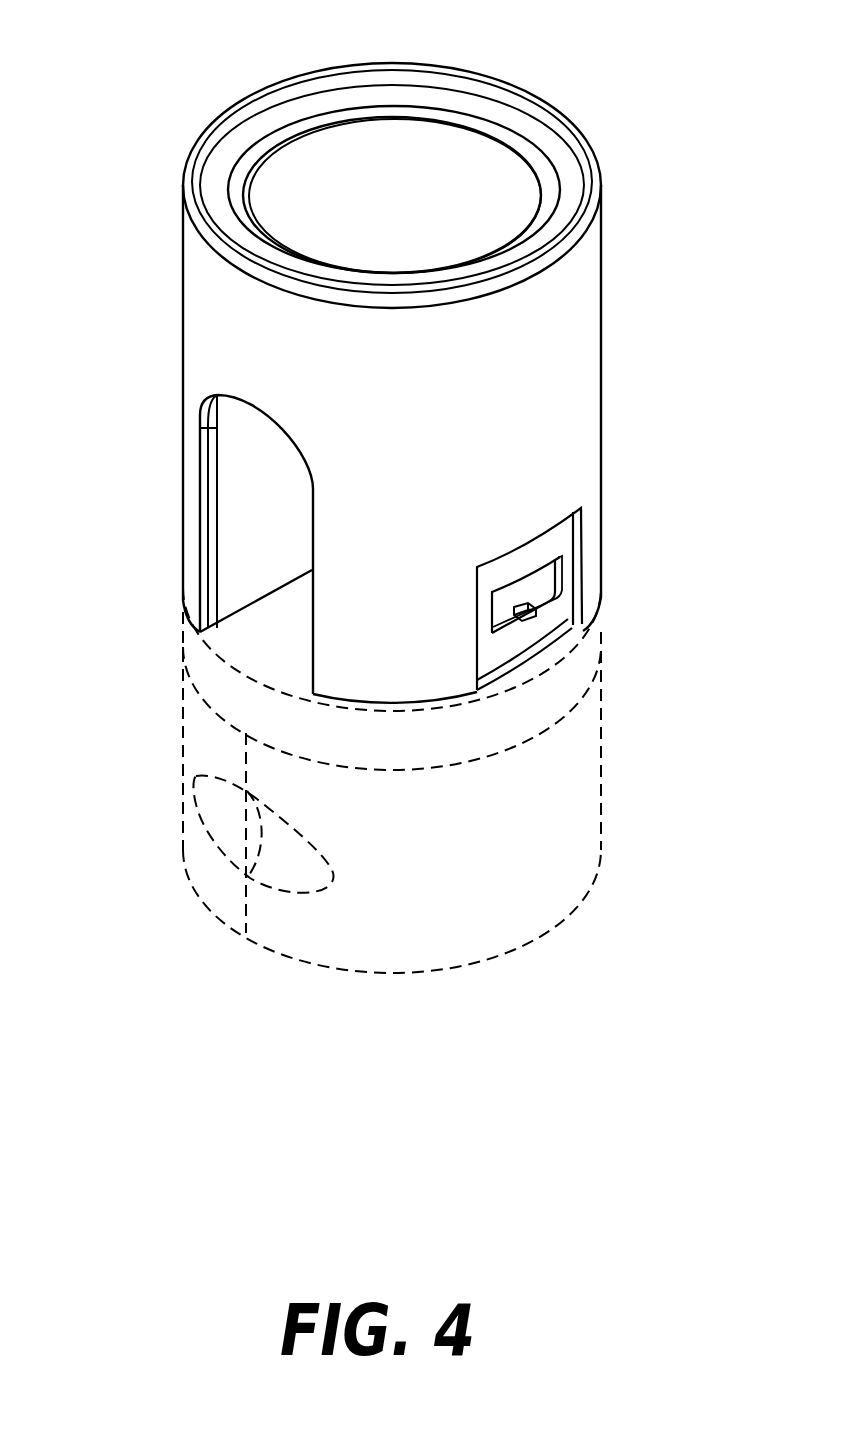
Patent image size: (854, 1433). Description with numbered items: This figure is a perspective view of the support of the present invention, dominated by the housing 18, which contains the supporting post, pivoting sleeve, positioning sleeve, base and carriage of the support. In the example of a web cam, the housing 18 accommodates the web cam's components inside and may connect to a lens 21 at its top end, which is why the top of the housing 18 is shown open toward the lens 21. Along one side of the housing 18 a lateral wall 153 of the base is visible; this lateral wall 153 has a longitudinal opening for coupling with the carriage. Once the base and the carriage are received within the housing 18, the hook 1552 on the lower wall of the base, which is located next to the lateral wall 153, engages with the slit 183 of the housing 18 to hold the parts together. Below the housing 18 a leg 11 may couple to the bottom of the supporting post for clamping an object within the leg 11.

The leg 11 is at (522, 707).
The housing 18 is at (573, 337).
The lens 21 is at (415, 147).
The lateral wall 153 is at (253, 470).
The slit 183 is at (547, 578).
The hook 1552 is at (536, 612).